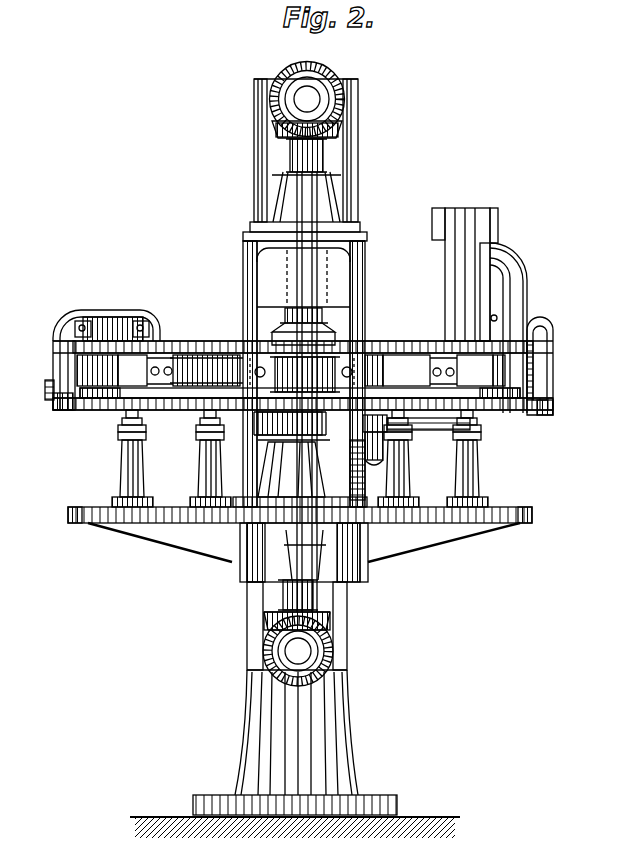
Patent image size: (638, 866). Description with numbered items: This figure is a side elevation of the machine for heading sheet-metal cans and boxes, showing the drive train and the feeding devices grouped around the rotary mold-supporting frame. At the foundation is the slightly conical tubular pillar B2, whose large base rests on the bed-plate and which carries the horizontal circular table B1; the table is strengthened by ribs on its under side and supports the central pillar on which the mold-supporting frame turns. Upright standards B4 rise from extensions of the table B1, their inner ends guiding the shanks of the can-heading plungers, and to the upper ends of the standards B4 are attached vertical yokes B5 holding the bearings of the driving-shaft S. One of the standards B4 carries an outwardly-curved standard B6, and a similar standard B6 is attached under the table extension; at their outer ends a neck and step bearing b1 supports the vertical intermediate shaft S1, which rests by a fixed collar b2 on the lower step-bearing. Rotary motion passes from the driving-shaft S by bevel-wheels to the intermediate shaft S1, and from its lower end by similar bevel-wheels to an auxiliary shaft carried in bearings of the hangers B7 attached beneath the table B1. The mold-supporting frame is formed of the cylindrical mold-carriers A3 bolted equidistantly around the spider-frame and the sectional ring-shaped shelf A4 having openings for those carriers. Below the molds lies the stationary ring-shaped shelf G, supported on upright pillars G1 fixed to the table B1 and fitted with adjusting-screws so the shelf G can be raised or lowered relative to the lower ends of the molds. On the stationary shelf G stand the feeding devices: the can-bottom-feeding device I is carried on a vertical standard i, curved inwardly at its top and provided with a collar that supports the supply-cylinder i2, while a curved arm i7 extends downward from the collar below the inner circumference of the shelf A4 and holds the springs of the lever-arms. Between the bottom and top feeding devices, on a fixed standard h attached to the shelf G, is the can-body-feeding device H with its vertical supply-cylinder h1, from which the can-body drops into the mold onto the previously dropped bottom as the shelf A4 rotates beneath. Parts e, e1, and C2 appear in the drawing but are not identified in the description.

The driving-shaft S is at (304, 374).
The vertical intermediate shaft S1 is at (301, 290).
The vertical yokes B5 is at (370, 152).
The neck and step bearing b1 is at (321, 164).
The outwardly-curved standard B6 is at (318, 190).
The upright standards B4 is at (374, 292).
The ring-shaped shelf A4 is at (92, 367).
The cylindrical mold-carriers A3 is at (285, 370).
The can-bottom-feeding devices I is at (106, 312).
The vertical standard i is at (63, 382).
The supply-cylinder i2 is at (94, 328).
The curved arm i7 is at (154, 325).
The can-body-feeding device H is at (459, 274).
The vertical supply-cylinder h1 is at (479, 292).
The fixed standard h is at (513, 328).
The stationary ring-shaped shelf G is at (503, 428).
The upright pillars G1 is at (300, 469).
The gear e is at (292, 454).
The pinion e1 is at (366, 440).
The shaft C2 is at (428, 432).
The horizontal circular table B1 is at (300, 531).
The fixed collar b2 is at (298, 595).
The hangers B7 is at (298, 596).
The tubular pillar B2 is at (332, 728).